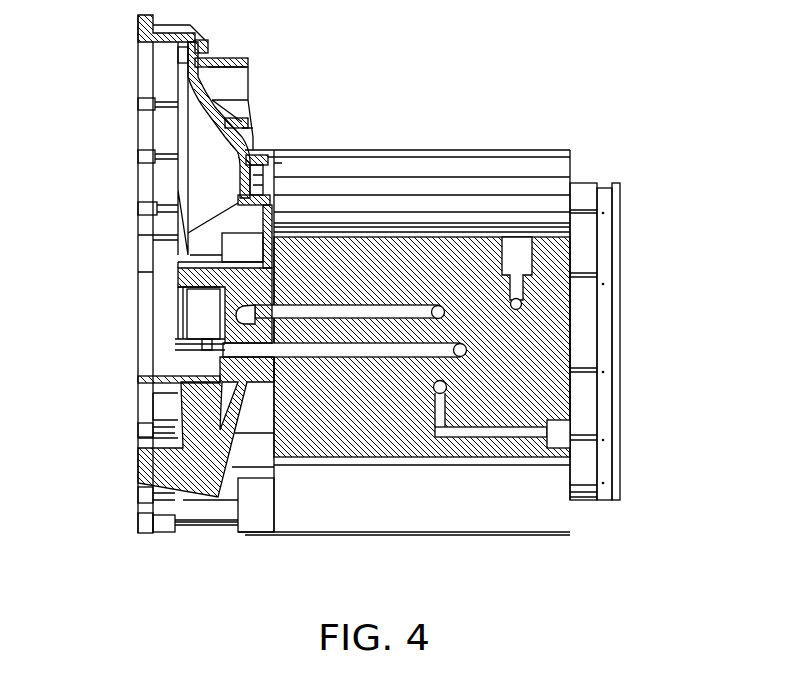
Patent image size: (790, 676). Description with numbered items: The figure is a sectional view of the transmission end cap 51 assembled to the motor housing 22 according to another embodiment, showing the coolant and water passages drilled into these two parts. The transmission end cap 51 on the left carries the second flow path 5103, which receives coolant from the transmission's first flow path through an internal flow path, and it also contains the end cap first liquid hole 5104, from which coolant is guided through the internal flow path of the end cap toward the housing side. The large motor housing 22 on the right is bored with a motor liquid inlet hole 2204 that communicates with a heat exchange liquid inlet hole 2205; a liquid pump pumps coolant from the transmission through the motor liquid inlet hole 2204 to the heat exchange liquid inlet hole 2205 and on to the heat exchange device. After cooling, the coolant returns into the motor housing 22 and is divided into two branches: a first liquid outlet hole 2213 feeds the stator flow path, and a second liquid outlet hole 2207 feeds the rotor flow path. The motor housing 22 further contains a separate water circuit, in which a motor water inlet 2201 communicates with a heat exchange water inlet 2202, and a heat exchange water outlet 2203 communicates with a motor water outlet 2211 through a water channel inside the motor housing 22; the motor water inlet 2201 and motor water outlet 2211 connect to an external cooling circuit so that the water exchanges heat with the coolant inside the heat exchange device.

The motor housing 22 is at (527, 185).
The transmission end cap 51 is at (212, 162).
The second flow path 5103 is at (238, 306).
The end cap first liquid hole 5104 is at (268, 352).
The motor water inlet 2201 is at (518, 251).
The heat exchange water inlet 2202 is at (518, 310).
The heat exchange water outlet 2203 is at (440, 394).
The motor liquid inlet hole 2204 is at (282, 305).
The heat exchange liquid inlet hole 2205 is at (438, 305).
The second liquid outlet hole 2207 is at (297, 440).
The motor water outlet 2211 is at (560, 434).
The first liquid outlet hole 2213 is at (467, 350).